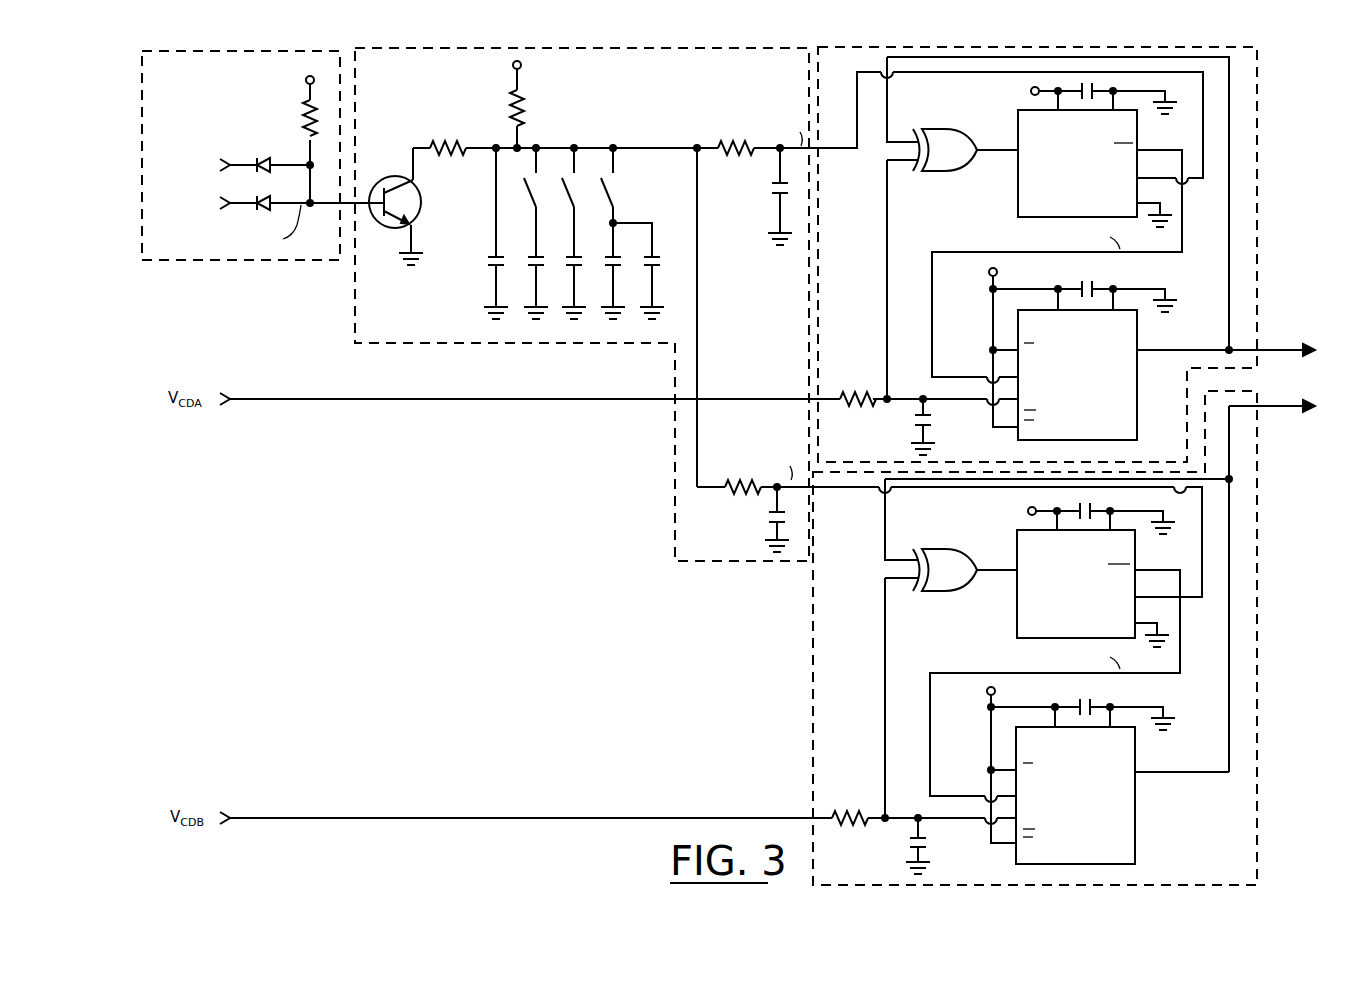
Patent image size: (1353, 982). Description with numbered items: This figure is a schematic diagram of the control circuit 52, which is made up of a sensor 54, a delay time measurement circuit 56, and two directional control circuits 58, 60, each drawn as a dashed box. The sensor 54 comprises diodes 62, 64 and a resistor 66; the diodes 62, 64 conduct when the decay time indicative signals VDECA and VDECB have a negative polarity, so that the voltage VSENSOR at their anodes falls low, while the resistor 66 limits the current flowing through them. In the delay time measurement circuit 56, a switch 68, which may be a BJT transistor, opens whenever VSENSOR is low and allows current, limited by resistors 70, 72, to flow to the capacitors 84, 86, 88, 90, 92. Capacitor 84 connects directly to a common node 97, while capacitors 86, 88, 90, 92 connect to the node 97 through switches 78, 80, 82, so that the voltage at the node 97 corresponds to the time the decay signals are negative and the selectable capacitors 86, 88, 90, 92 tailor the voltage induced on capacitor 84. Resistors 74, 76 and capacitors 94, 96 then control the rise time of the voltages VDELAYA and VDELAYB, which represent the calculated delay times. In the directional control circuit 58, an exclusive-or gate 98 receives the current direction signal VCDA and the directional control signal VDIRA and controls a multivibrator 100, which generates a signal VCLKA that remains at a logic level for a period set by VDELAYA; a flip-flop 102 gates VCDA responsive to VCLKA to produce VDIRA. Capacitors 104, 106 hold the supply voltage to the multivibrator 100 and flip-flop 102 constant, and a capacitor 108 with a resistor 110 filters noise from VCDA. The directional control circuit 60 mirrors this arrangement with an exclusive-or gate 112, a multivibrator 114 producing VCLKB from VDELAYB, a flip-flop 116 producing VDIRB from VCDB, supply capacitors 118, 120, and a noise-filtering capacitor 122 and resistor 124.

The circuit 52 is at (1308, 116).
The sensor 54 is at (207, 66).
The delay time measurement circuit 56 is at (632, 72).
The directional control circuit 58 is at (1245, 97).
The directional control circuit 60 is at (943, 846).
The diode 62 is at (265, 156).
The diode 64 is at (266, 212).
The resistor 66 is at (300, 118).
The switch 68 is at (422, 192).
The resistor 70 is at (449, 141).
The resistor 72 is at (528, 106).
The resistor 74 is at (739, 164).
The resistor 76 is at (732, 506).
The switch 78 is at (519, 202).
The switch 80 is at (557, 202).
The switch 82 is at (595, 204).
The capacitor 84 is at (486, 274).
The capacitor 86 is at (528, 270).
The capacitor 88 is at (566, 270).
The capacitor 90 is at (606, 270).
The capacitor 92 is at (646, 270).
The capacitor 94 is at (774, 196).
The capacitor 96 is at (768, 528).
The common node 97 is at (558, 146).
The exclusive-or gate 98 is at (939, 126).
The multivibrator 100 is at (1014, 122).
The flip-flop 102 is at (1136, 398).
The capacitor 104 is at (1096, 84).
The capacitor 106 is at (1099, 280).
The capacitor 108 is at (914, 426).
The resistor 110 is at (856, 392).
The exclusive-or gate 112 is at (954, 543).
The multivibrator 114 is at (1016, 593).
The flip-flop 116 is at (1138, 822).
The capacitor 118 is at (1094, 510).
The capacitor 120 is at (1096, 705).
The capacitor 122 is at (910, 846).
The resistor 124 is at (850, 810).